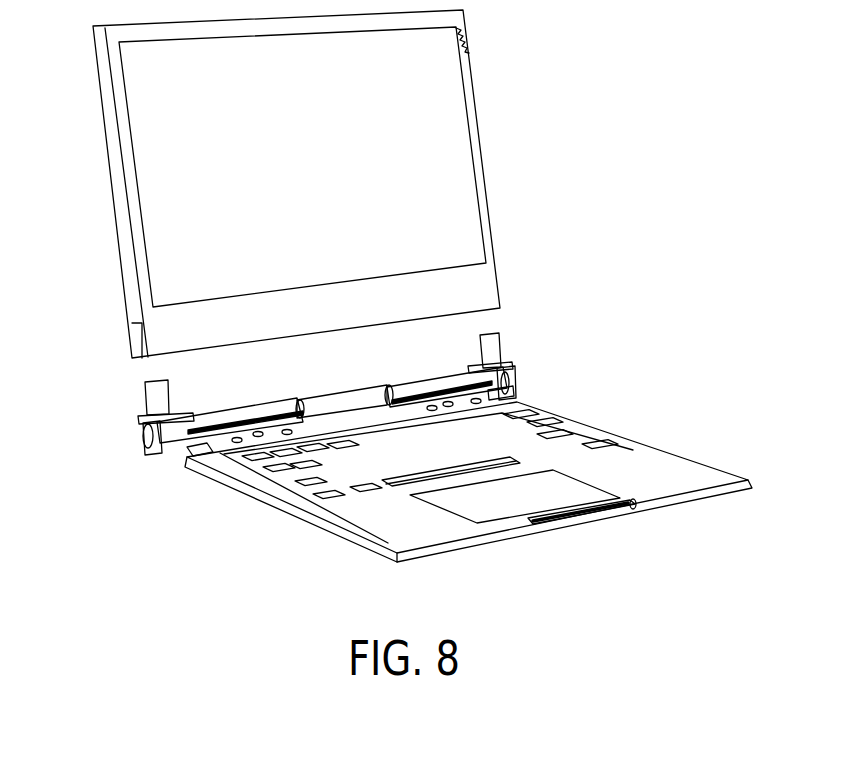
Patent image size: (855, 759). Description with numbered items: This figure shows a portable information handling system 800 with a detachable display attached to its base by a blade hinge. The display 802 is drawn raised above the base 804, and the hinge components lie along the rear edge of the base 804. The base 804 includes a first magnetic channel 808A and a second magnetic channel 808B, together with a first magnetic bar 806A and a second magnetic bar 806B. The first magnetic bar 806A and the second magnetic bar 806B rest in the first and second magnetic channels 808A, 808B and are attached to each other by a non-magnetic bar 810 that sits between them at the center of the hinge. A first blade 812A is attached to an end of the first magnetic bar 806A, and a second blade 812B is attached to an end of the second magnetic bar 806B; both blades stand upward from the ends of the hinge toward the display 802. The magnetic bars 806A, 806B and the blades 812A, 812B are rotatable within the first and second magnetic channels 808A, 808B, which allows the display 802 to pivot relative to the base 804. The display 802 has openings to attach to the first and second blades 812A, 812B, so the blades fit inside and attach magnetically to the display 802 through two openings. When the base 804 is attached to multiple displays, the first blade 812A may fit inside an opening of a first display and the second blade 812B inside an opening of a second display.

The portable information handling system 800 is at (630, 111).
The display 802 is at (481, 147).
The base 804 is at (660, 457).
The first magnetic bar 806A is at (432, 387).
The second magnetic bar 806B is at (228, 420).
The first magnetic channel 808A is at (488, 391).
The second magnetic channel 808B is at (188, 443).
The non-magnetic bar 810 is at (343, 403).
The first blade 812A is at (491, 345).
The second blade 812B is at (155, 402).